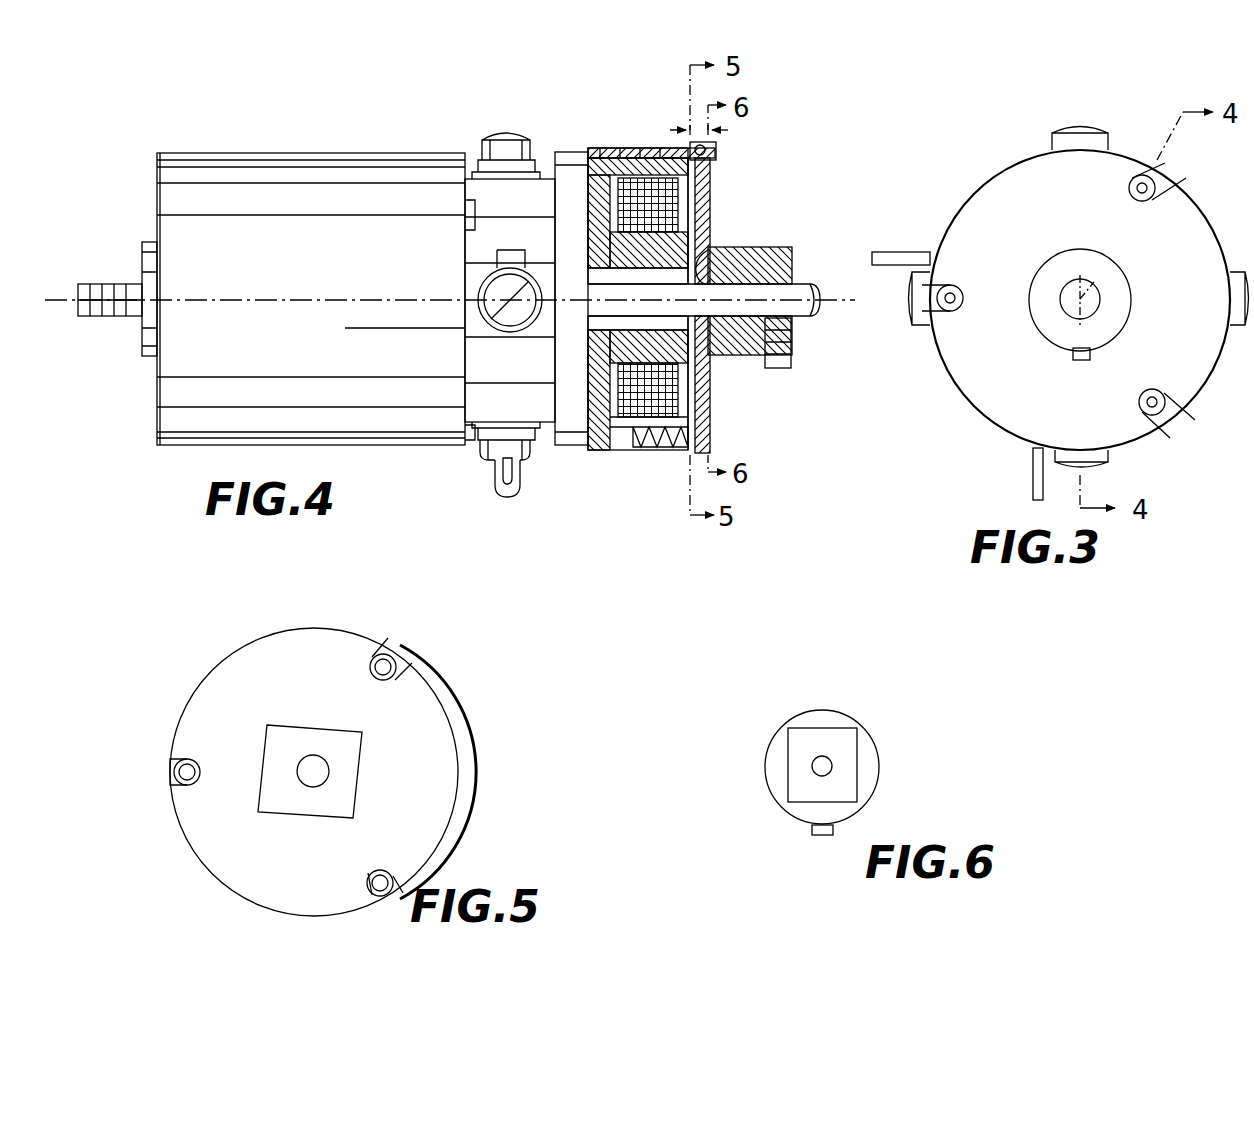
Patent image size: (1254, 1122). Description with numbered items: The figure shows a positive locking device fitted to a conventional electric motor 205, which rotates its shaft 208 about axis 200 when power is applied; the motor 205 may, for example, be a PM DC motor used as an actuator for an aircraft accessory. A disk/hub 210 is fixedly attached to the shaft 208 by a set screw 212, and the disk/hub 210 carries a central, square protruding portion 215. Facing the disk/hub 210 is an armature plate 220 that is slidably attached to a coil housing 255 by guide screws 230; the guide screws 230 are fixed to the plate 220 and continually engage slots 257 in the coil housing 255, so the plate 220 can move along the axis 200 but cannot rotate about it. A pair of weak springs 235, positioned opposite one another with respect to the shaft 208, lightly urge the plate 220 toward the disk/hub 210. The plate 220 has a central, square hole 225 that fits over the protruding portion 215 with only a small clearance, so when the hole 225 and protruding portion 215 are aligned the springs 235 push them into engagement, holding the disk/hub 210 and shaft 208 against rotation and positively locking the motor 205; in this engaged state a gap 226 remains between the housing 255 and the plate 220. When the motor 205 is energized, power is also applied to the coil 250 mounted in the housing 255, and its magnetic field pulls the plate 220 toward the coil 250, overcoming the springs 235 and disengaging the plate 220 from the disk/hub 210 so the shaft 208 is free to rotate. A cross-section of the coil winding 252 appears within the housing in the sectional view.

In FIG. 4, the axis 200 is at (308, 300).
In FIG. 4, the motor 205 is at (357, 417).
In FIG. 4, the shaft 208 is at (800, 288).
In FIG. 3, the shaft 208 is at (1062, 300).
In FIG. 6, the shaft 208 is at (835, 763).
In FIG. 4, the disk/hub 210 is at (778, 247).
In FIG. 3, the disk/hub 210 is at (1052, 268).
In FIG. 6, the disk/hub 210 is at (870, 742).
In FIG. 4, the set screw 212 is at (778, 368).
In FIG. 3, the set screw 212 is at (1073, 356).
In FIG. 6, the set screw 212 is at (820, 838).
In FIG. 4, the protruding portion 215 is at (700, 262).
In FIG. 6, the protruding portion 215 is at (790, 770).
In FIG. 4, the plate 220 is at (705, 240).
In FIG. 3, the plate 220 is at (1000, 395).
In FIG. 5, the plate 220 is at (428, 727).
In FIG. 5, the hole 225 is at (285, 725).
In FIG. 4, the gap 226 is at (677, 132).
In FIG. 4, the guide screws 230 is at (716, 160).
In FIG. 3, the guide screws 230 is at (1157, 194).
In FIG. 5, the guide screws 230 is at (388, 655).
In FIG. 4, the weak springs 235 is at (648, 450).
In FIG. 4, the coil 250 is at (702, 427).
In FIG. 4, the coil 252 is at (662, 338).
In FIG. 4, the coil housing 255 is at (606, 452).
In FIG. 4, the slots 257 is at (628, 165).